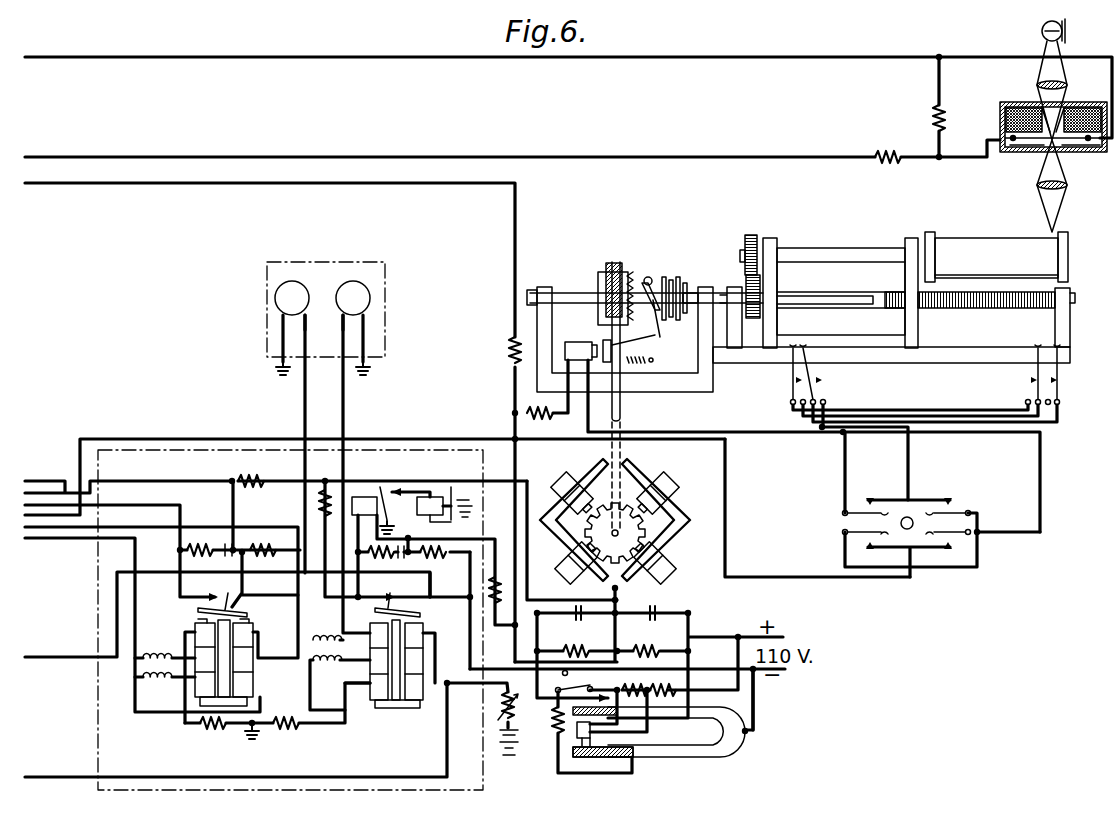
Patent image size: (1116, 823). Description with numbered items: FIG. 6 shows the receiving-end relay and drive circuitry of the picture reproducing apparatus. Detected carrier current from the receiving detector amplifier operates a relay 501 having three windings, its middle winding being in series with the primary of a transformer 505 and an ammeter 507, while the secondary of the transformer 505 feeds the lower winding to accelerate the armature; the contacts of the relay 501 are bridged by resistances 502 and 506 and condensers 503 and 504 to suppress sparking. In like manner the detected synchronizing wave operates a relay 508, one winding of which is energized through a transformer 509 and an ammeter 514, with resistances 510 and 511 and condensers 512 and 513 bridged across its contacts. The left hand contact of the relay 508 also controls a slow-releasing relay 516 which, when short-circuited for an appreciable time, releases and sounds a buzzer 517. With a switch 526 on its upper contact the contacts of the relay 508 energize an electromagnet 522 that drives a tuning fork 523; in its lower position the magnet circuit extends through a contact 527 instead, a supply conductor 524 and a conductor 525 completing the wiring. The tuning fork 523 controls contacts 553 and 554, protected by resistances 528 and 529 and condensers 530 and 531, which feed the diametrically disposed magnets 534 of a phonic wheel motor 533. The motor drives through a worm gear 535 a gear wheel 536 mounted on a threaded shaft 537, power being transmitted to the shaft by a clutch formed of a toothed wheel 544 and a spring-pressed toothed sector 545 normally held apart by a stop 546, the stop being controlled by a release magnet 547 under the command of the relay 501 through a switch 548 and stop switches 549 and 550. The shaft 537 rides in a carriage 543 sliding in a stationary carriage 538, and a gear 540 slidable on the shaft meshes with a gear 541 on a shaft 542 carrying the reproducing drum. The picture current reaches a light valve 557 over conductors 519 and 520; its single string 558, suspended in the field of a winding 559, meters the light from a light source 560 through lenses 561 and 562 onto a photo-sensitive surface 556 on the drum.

The relay 501 is at (235, 675).
The resistance 502 is at (180, 550).
The condenser 503 is at (215, 530).
The condenser 504 is at (245, 575).
The transformer 505 is at (142, 675).
The resistance 506 is at (255, 530).
The ammeter 507 is at (275, 302).
The relay 508 is at (398, 712).
The transformer 509 is at (313, 645).
The resistance 510 is at (385, 560).
The resistance 511 is at (450, 552).
The condenser 512 is at (400, 545).
The condenser 513 is at (425, 560).
The ammeter 514 is at (372, 300).
The relay 516 is at (365, 497).
The buzzer 517 is at (432, 497).
The conductor 519 is at (262, 59).
The conductor 520 is at (263, 158).
The electromagnet 522 is at (555, 755).
The tuning fork 523 is at (676, 732).
The supply conductor 524 is at (757, 700).
The conductor 525 is at (680, 680).
The switch 526 is at (602, 678).
The contact 527 is at (636, 760).
The resistance 528 is at (564, 639).
The resistance 529 is at (652, 620).
The condenser 530 is at (598, 622).
The condenser 531 is at (654, 602).
The phonic wheel motor 533 is at (640, 535).
The magnets 534 is at (648, 490).
The worm gear 535 is at (640, 275).
The gear wheel 536 is at (608, 262).
The shaft 537 is at (569, 282).
The stationary carriage 538 is at (705, 378).
The gear 540 is at (743, 279).
The gear 541 is at (743, 238).
The shaft 542 is at (830, 250).
The carriage 543 is at (922, 330).
The toothed wheel 544 is at (612, 255).
The toothed sector 545 is at (650, 340).
The stop 546 is at (646, 358).
The release magnet 547 is at (584, 330).
The switch 548 is at (920, 560).
The stop switch 549 is at (808, 378).
The stop switch 550 is at (1028, 378).
The contact 553 is at (649, 681).
The contact 554 is at (630, 733).
The photo-sensitive surface 556 is at (978, 232).
The light valve 557 is at (1016, 136).
The string 558 is at (1008, 150).
The winding 559 is at (1000, 128).
The light source 560 is at (1042, 27).
The lens 561 is at (1068, 83).
The lens 562 is at (1068, 183).